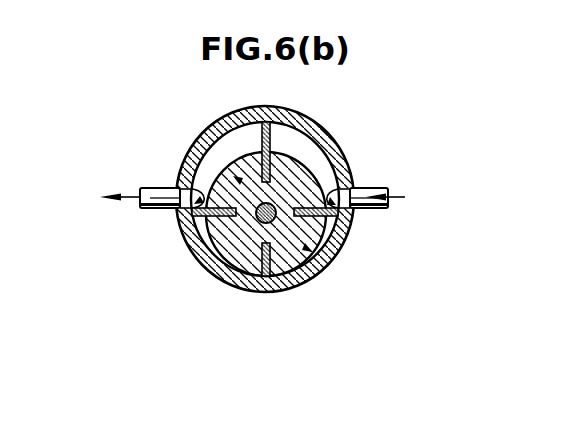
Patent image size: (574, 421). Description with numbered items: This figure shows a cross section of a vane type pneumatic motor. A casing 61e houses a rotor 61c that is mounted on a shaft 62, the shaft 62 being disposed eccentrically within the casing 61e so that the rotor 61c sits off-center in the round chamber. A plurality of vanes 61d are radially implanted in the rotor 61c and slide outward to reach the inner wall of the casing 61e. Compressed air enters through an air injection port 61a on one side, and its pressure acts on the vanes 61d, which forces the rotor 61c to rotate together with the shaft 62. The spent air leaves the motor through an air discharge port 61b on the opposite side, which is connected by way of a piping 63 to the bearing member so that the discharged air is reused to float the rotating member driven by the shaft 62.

The air injection port 61a is at (386, 189).
The air discharge port 61b is at (157, 187).
The rotor 61c is at (318, 266).
The vanes 61d is at (274, 288).
The casing 61e is at (346, 231).
The shaft 62 is at (272, 205).
The piping 63 is at (157, 209).